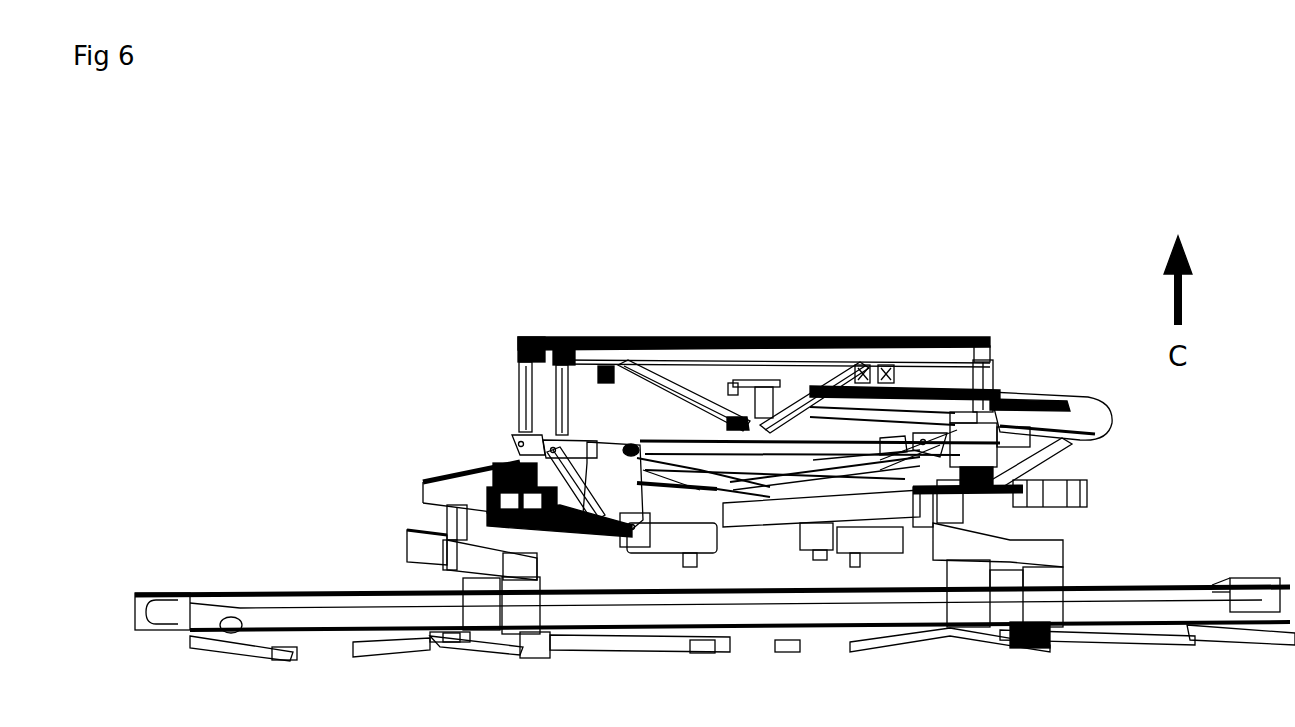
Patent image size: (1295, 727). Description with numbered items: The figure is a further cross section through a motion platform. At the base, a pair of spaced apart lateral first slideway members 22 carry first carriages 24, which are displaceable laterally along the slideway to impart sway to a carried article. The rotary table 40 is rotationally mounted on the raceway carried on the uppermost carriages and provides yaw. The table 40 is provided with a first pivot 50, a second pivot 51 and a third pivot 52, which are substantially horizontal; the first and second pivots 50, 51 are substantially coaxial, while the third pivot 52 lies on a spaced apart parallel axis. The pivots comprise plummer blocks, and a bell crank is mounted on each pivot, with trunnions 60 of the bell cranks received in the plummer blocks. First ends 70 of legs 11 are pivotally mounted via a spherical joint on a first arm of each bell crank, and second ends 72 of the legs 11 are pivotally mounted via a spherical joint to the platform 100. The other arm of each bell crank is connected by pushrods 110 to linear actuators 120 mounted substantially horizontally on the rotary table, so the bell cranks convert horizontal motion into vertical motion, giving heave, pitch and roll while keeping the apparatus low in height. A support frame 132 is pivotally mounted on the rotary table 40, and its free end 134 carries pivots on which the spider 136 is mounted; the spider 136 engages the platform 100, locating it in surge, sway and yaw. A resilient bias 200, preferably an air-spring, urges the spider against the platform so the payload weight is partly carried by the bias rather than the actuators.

The legs 11 is at (516, 397).
The first slideway members 22 is at (416, 546).
The first carriages 24 is at (448, 543).
The rotary table 40 is at (1042, 448).
The first pivot 50 is at (641, 486).
The second pivot 51 is at (926, 437).
The third pivot 52 is at (913, 443).
The trunnions 60 is at (631, 443).
The first ends 70 is at (510, 421).
The second ends 72 is at (516, 358).
The platform 100 is at (586, 336).
The pushrods 110 is at (697, 521).
The linear actuators 120 is at (821, 528).
The support frame 132 is at (1055, 389).
The free end 134 is at (727, 423).
The spider 136 is at (860, 376).
The resilient bias 200 is at (978, 443).